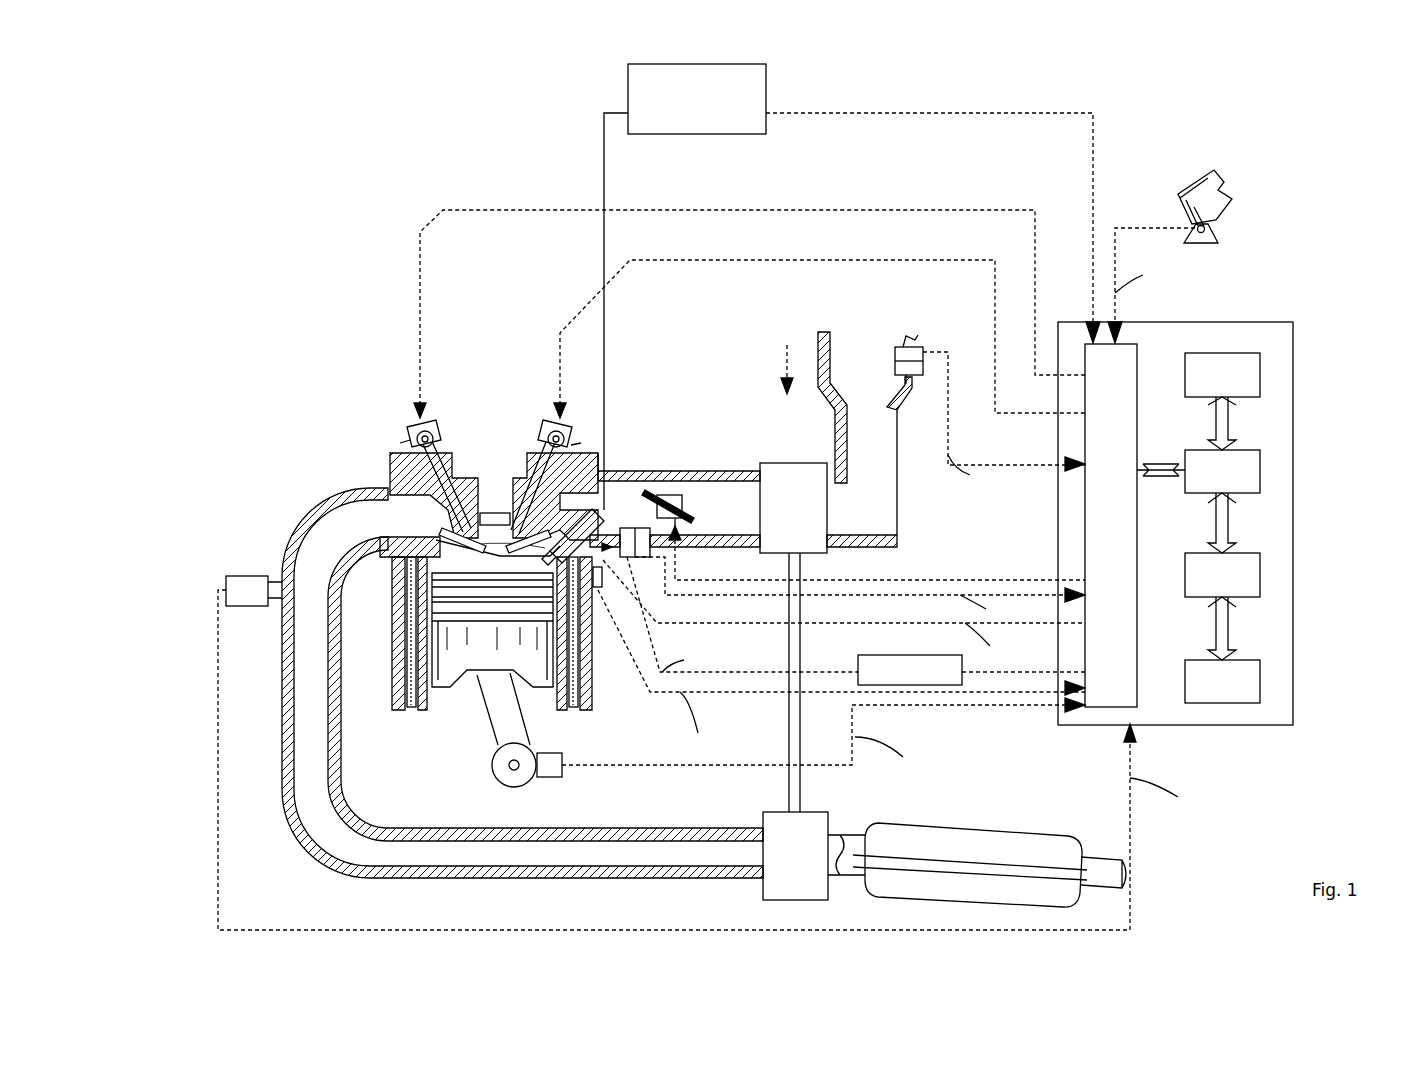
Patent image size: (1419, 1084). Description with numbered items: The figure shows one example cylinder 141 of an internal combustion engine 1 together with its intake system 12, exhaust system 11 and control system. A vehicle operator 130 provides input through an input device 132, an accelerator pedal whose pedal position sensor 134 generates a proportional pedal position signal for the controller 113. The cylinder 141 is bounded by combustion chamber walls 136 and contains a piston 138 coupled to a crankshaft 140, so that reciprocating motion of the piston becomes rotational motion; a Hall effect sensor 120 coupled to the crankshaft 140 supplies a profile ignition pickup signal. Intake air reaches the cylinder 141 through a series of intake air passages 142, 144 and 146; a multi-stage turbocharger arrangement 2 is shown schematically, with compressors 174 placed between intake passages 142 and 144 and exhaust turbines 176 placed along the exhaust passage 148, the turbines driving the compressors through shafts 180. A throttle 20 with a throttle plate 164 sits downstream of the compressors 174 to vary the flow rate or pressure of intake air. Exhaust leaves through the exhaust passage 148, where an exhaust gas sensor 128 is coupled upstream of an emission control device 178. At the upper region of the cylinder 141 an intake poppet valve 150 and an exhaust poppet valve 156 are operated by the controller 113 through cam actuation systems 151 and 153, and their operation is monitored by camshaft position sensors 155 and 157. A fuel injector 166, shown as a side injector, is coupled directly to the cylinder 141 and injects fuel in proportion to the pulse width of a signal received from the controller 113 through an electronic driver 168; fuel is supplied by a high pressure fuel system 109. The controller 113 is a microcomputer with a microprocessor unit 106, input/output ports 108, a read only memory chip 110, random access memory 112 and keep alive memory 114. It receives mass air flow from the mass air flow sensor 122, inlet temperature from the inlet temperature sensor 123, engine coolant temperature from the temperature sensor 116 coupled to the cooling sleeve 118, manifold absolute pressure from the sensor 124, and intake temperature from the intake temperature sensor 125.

The internal combustion engine 1 is at (212, 145).
The multi-stage turbocharger arrangement 2 is at (787, 359).
The exhaust system 11 is at (186, 843).
The intake system 12 is at (649, 360).
The throttle 20 is at (676, 494).
The microprocessor unit 106 is at (1262, 470).
The input/output ports 108 is at (1140, 352).
The high pressure fuel system 109 is at (766, 80).
The read only memory chip 110 is at (1262, 368).
The random access memory 112 is at (1262, 575).
The controller 113 is at (1290, 322).
The keep alive memory 114 is at (1262, 682).
The temperature sensor 116 is at (622, 660).
The cooling sleeve 118 is at (590, 695).
The Hall effect sensor 120 is at (549, 780).
The mass air flow sensor 122 is at (920, 345).
The inlet temperature sensor 123 is at (908, 378).
The manifold absolute pressure sensor 124 is at (647, 582).
The intake temperature sensor 125 is at (667, 565).
The exhaust gas sensor 128 is at (224, 580).
The vehicle operator 130 is at (1228, 192).
The input device 132 is at (1178, 200).
The pedal position sensor 134 is at (1216, 229).
The combustion chamber walls 136 is at (432, 700).
The piston 138 is at (473, 660).
The crankshaft 140 is at (505, 783).
The cylinder 141 is at (407, 568).
The intake air passage 142 is at (882, 381).
The intake air passage 144 is at (742, 514).
The intake air passage 146 is at (640, 514).
The exhaust passage 148 is at (374, 524).
The intake poppet valve 150 is at (527, 533).
The cam actuation system 151 is at (548, 424).
The cam actuation system 153 is at (437, 424).
The camshaft position sensor 155 is at (573, 441).
The exhaust poppet valve 156 is at (392, 497).
The camshaft position sensor 157 is at (410, 436).
The throttle plate 164 is at (618, 479).
The fuel injector 166 is at (813, 590).
The electronic driver 168 is at (863, 655).
The compressors 174 is at (790, 462).
The exhaust turbines 176 is at (763, 890).
The emission control device 178 is at (1040, 822).
The shafts 180 is at (800, 773).